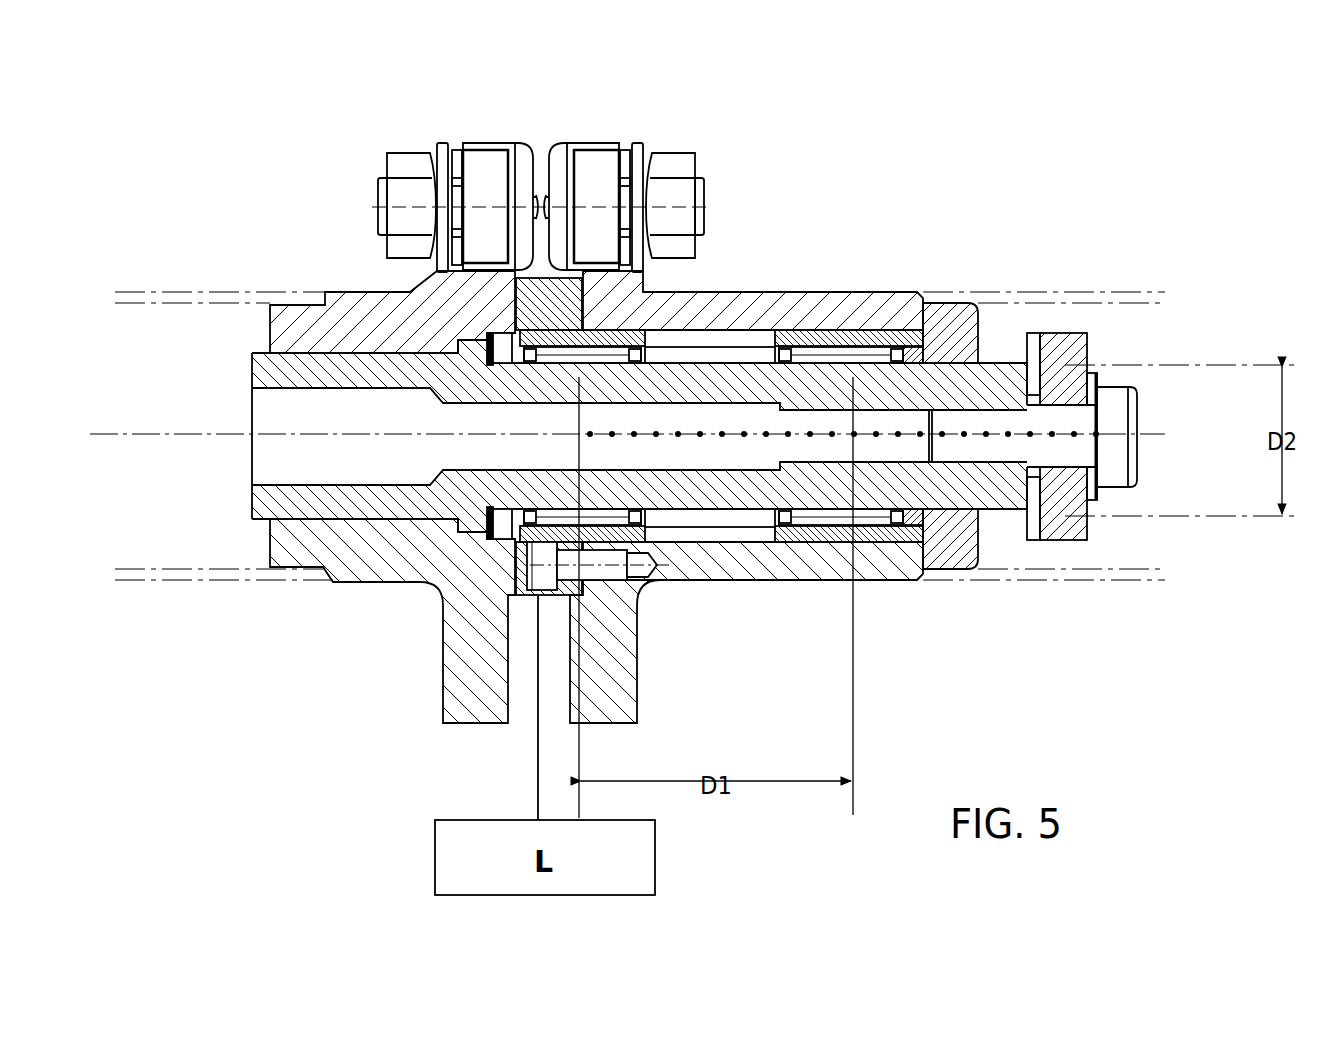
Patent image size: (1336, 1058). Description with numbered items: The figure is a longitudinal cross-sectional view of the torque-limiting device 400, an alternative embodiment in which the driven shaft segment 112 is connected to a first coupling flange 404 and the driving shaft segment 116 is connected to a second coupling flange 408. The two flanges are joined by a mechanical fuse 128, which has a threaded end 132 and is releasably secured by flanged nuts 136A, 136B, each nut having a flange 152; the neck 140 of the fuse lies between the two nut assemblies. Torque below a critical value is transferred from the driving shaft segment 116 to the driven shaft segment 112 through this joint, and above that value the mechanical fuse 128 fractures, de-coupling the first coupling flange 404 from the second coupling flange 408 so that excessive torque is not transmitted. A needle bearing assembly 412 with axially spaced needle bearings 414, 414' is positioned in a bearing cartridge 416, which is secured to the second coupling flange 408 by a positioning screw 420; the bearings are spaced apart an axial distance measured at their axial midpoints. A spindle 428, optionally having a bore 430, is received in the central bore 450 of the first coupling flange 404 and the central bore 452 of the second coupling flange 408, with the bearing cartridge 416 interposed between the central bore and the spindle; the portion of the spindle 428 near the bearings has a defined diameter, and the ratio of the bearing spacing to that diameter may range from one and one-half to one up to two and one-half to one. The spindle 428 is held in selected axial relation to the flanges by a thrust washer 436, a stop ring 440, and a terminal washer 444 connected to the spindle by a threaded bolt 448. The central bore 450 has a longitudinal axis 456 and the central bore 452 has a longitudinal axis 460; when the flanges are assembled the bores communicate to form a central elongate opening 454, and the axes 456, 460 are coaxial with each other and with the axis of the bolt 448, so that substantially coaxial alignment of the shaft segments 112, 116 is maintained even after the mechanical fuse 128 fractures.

The driven shaft segment 112 is at (118, 291).
The driving shaft segment 116 is at (1075, 290).
The mechanical fuse 128 is at (584, 138).
The threaded end 132 is at (488, 165).
The flanged nut 136A is at (700, 162).
The flanged nut 136B is at (387, 160).
The fastener neck 140 is at (540, 195).
The flange 152 is at (442, 146).
The torque-limiting device 400 is at (855, 130).
The first coupling flange 404 is at (443, 722).
The second coupling flange 408 is at (642, 724).
The needle bearing assembly 412 is at (866, 328).
The needle bearing 414 is at (639, 403).
The needle bearing 414' is at (886, 384).
The bearing cartridge 416 is at (743, 330).
The positioning screw 420 is at (545, 580).
The spindle 428 is at (252, 512).
The bore 430 is at (312, 470).
The thrust washer 436 is at (1035, 541).
The stop ring 440 is at (1088, 345).
The terminal washer 444 is at (1097, 497).
The threaded bolt 448 is at (1140, 432).
The central bore 450 is at (378, 507).
The central bore 452 is at (867, 510).
The central elongate opening 454 is at (938, 500).
The longitudinal axis 456 is at (136, 432).
The longitudinal axis 460 is at (1107, 425).